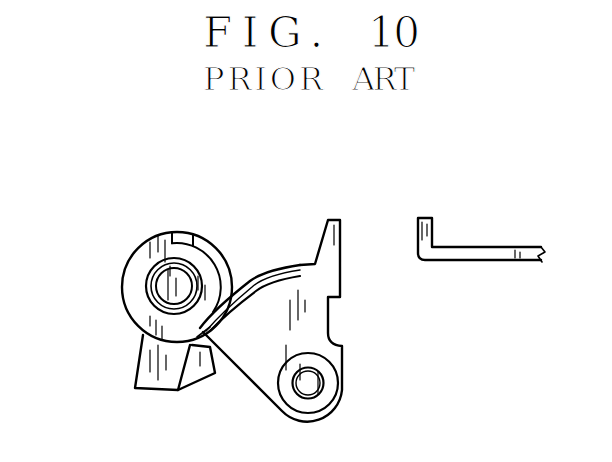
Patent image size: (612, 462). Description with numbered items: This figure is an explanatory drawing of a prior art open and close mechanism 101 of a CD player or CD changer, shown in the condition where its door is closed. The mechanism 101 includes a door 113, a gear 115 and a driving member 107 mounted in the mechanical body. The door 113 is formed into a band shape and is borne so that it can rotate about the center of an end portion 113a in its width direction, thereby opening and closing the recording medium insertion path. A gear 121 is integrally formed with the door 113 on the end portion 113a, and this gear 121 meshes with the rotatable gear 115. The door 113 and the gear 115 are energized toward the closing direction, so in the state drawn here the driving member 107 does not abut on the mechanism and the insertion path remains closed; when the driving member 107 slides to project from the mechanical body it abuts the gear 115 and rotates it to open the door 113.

The open and close mechanism 101 is at (235, 266).
The end portion 113a is at (177, 277).
The door 113 is at (134, 345).
The gear 121 is at (224, 260).
The gear 115 is at (349, 355).
The driving member 107 is at (471, 246).